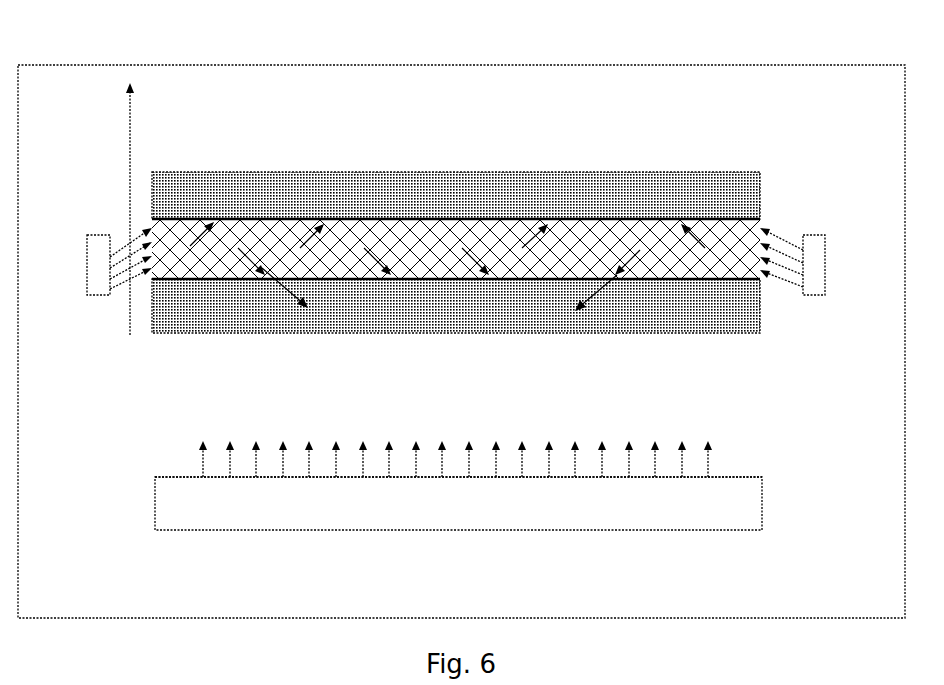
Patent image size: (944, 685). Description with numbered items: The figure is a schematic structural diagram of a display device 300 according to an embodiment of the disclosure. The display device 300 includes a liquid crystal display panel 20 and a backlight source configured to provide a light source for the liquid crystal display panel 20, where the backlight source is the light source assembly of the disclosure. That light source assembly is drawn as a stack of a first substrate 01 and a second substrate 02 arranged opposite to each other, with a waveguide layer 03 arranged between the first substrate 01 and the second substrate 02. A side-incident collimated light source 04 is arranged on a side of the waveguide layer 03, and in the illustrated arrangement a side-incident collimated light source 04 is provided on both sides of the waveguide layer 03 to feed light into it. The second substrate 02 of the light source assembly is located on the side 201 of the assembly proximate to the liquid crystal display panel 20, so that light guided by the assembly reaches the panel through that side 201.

The display device 300 is at (720, 65).
The first substrate 01 is at (355, 196).
The waveguide layer 03 is at (452, 267).
The second substrate 02 is at (512, 300).
The side-incident collimated light source 04 is at (100, 257).
The liquid crystal display panel 20 is at (493, 510).
The side proximate to the liquid crystal display panel 201 is at (735, 476).